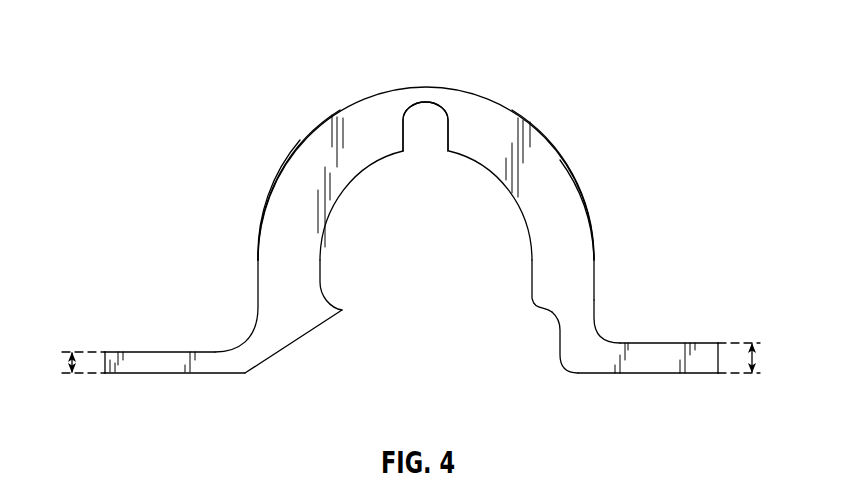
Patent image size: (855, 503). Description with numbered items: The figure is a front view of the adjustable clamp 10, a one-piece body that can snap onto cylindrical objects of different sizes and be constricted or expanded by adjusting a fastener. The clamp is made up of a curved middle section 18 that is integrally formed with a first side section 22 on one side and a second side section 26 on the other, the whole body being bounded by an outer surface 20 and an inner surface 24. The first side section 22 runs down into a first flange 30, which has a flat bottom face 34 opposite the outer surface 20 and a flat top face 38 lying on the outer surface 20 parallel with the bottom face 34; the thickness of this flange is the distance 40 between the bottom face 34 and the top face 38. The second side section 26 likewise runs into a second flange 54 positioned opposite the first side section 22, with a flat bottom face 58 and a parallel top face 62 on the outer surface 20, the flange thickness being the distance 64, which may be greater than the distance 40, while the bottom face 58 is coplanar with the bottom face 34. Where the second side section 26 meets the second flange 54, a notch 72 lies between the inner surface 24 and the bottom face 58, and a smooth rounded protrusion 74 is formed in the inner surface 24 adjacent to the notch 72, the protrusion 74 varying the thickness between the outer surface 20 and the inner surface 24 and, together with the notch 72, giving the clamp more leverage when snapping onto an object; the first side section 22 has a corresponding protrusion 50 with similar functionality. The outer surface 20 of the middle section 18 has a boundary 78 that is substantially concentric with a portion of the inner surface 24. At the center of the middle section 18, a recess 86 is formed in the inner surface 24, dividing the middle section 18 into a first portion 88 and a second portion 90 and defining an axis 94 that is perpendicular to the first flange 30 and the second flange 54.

The adjustable clamp 10 is at (202, 33).
The middle section 18 is at (492, 86).
The outer surface 20 is at (581, 151).
The first side section 22 is at (242, 247).
The inner surface 24 is at (504, 193).
The second side section 26 is at (605, 306).
The first flange 30 is at (153, 360).
The bottom face 34 is at (241, 376).
The top face 38 is at (178, 348).
The distance 40 is at (68, 362).
The protrusion 50 is at (342, 311).
The second flange 54 is at (703, 365).
The bottom face 58 is at (623, 375).
The top face 62 is at (675, 343).
The distance 64 is at (758, 356).
The notch 72 is at (552, 316).
The protrusion 74 is at (537, 309).
The boundary 78 is at (306, 108).
The recess 86 is at (426, 138).
The first portion 88 is at (252, 150).
The second portion 90 is at (533, 112).
The axis 94 is at (424, 130).